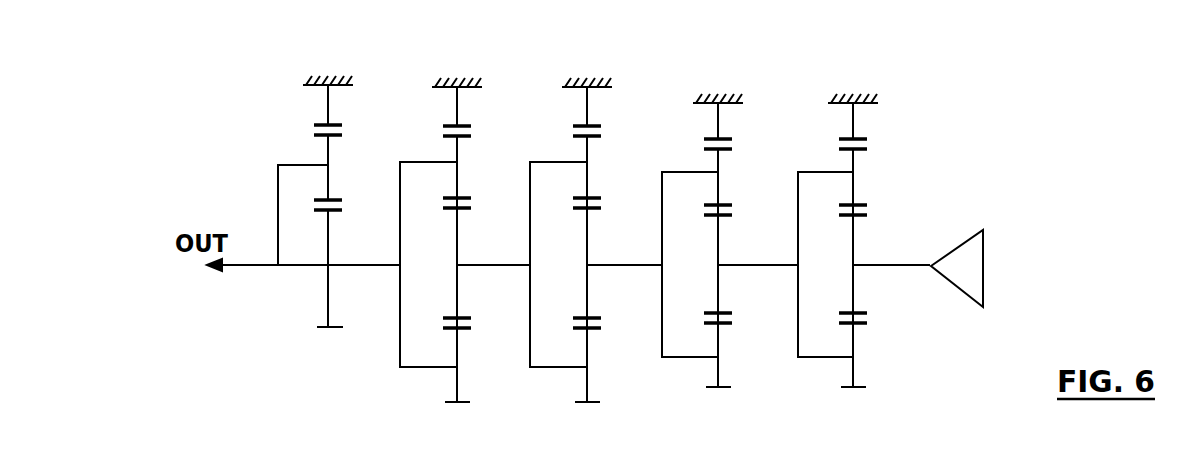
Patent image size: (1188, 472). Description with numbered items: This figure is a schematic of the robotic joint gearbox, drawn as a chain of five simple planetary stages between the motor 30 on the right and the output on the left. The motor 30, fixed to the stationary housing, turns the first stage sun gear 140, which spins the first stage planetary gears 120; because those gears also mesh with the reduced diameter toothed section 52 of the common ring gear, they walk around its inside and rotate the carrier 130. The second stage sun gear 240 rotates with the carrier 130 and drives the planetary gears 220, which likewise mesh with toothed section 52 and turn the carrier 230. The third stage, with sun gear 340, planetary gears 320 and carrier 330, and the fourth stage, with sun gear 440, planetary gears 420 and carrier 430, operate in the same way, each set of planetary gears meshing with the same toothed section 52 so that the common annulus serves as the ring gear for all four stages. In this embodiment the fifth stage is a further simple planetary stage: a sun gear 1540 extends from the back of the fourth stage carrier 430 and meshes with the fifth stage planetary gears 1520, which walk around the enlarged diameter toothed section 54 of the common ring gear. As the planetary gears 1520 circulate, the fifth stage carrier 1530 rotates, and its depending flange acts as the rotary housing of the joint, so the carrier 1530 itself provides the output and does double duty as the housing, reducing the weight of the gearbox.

The motor 30 is at (965, 241).
The reduced diameter toothed section 52 is at (587, 110).
The enlarged diameter toothed section 54 is at (328, 108).
The planetary gears 120 is at (853, 160).
The carrier 130 is at (823, 357).
The sun gear 140 is at (853, 248).
The planetary gears 220 is at (718, 163).
The carrier 230 is at (678, 357).
The sun gear 240 is at (718, 248).
The planetary gears 320 is at (587, 153).
The carrier 330 is at (550, 367).
The sun gear 340 is at (587, 248).
The planetary gears 420 is at (457, 155).
The carrier 430 is at (427, 367).
The sun gear 440 is at (457, 247).
The planetary gears 1520 is at (328, 156).
The fifth stage carrier 1530 is at (278, 206).
The sun gear 1540 is at (328, 297).